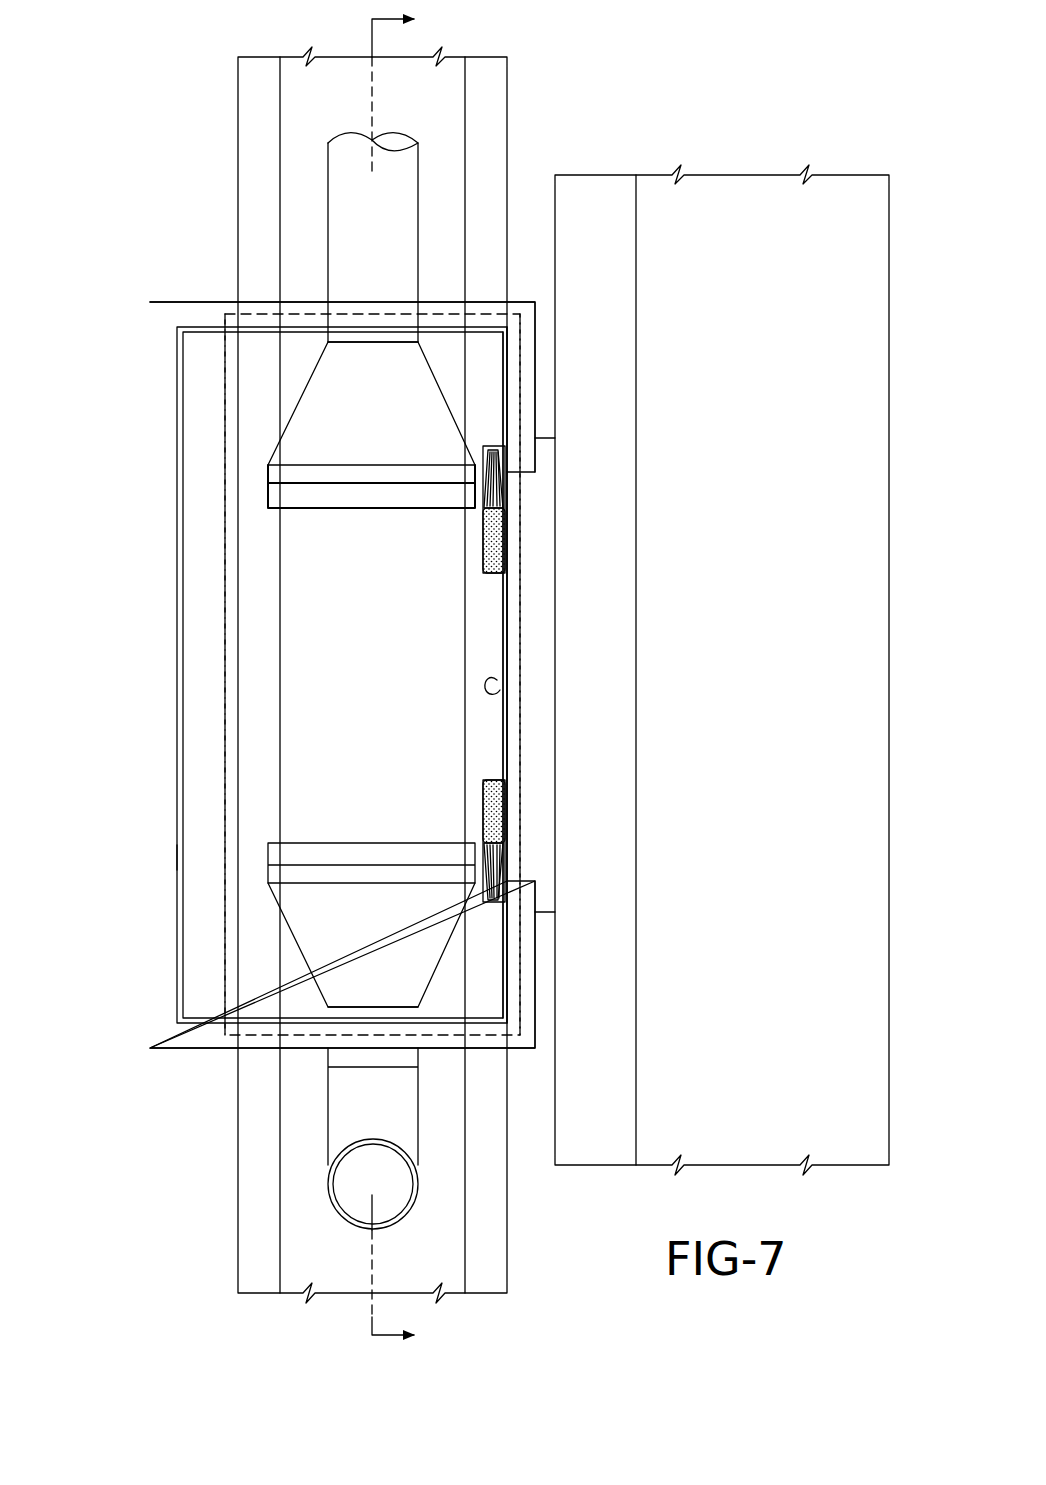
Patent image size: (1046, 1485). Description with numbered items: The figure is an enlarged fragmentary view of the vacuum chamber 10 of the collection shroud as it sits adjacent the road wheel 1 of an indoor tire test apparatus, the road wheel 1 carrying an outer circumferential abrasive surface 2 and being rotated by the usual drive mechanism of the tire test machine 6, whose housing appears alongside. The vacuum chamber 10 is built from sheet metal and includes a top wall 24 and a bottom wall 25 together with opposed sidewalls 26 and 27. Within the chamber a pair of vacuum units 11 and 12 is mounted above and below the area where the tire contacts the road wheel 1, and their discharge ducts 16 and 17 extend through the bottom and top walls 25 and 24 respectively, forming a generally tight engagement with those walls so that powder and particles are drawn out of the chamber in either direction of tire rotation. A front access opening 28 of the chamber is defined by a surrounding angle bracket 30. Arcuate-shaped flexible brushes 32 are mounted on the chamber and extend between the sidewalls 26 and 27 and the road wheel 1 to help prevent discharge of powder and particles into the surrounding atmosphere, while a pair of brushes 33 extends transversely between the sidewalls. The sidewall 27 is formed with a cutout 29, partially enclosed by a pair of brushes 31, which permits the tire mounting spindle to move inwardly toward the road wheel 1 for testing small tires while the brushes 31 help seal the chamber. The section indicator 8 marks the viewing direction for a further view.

The road wheel 1 is at (512, 88).
The outer circumferential abrasive surface 2 is at (441, 140).
The tire test machine 6 is at (726, 180).
The section line 8- 8 is at (408, 678).
The vacuum chamber 10 is at (158, 296).
The vacuum unit 11 is at (391, 931).
The vacuum unit 12 is at (391, 442).
The discharge duct 16 is at (346, 1123).
The discharge duct 17 is at (348, 184).
The top wall 24 is at (377, 333).
The bottom wall 25 is at (372, 1018).
The sidewall 26 is at (178, 762).
The sidewall 27 is at (508, 391).
The front access opening 28 is at (186, 867).
The cutout 29 is at (500, 690).
The angle bracket 30 is at (526, 353).
The brush 31 is at (496, 553).
The arcuate-shaped flexible brush 32 is at (515, 426).
The brush 33 is at (270, 318).